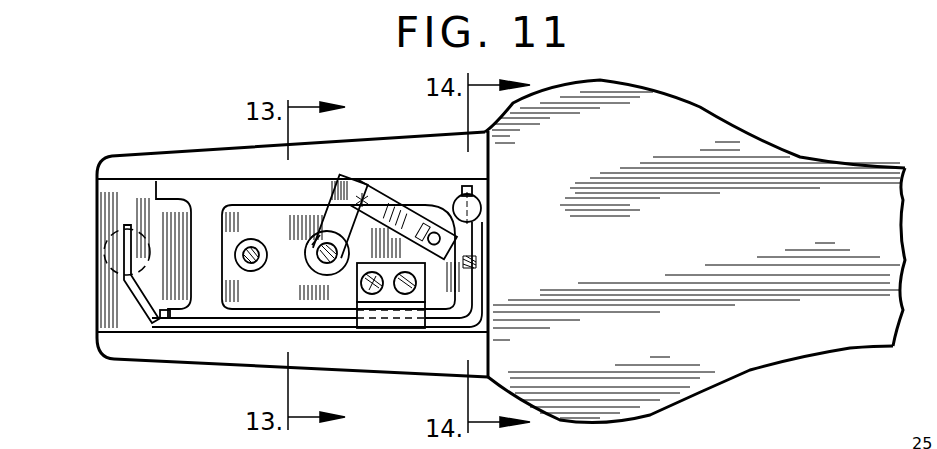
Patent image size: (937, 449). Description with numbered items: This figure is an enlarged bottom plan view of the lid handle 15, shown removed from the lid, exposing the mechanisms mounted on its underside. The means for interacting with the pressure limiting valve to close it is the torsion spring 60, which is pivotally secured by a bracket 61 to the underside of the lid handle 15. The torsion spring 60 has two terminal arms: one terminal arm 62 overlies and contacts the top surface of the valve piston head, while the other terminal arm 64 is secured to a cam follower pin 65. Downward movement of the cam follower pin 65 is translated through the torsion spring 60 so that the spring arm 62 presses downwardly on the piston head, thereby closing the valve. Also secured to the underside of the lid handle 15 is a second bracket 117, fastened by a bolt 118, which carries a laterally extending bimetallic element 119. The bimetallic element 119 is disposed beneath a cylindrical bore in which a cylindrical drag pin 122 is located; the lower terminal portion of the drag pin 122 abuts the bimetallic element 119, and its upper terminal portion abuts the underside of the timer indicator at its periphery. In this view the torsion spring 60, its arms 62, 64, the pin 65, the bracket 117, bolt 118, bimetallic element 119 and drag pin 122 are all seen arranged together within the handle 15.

The lid handle 15 is at (160, 160).
The torsion spring 60 is at (200, 323).
The bracket 61 is at (388, 298).
The terminal arm 62 is at (123, 257).
The terminal arm 64 is at (482, 233).
The cam follower pin 65 is at (481, 206).
The bracket 117 is at (326, 221).
The bolt 118 is at (325, 263).
The bimetallic element 119 is at (400, 207).
The drag pin 122 is at (487, 272).